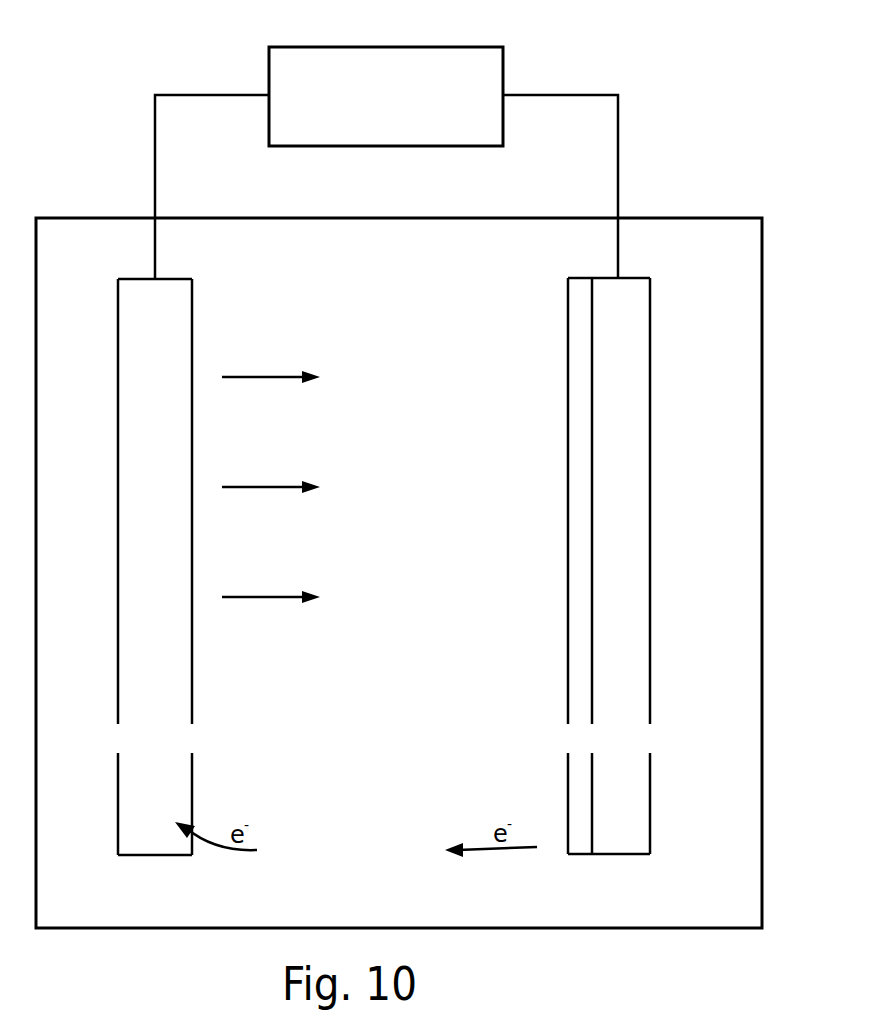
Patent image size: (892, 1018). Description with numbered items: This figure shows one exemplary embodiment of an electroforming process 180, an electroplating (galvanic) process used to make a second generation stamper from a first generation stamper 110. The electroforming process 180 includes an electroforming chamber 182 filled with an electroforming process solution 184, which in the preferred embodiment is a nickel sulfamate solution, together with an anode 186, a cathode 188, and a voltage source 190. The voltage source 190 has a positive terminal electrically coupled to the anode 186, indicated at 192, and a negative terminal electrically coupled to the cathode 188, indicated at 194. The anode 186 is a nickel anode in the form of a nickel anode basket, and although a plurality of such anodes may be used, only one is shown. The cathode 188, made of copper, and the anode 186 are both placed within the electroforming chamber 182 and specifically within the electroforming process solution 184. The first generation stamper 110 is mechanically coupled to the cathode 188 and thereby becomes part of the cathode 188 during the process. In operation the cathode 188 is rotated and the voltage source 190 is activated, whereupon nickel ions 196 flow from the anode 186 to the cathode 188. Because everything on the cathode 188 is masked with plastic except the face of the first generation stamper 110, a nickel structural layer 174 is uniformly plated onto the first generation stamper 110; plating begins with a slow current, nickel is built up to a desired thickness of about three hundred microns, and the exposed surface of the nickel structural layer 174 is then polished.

The electroforming process 180 is at (143, 75).
The voltage source 190 is at (355, 46).
The positive terminal coupling 192 is at (155, 152).
The negative terminal coupling 194 is at (618, 140).
The anode 186 is at (118, 514).
The cathode 188 is at (650, 380).
The nickel structural layer 174 is at (568, 338).
The first generation stamper 110 is at (578, 847).
The nickel ions 196 is at (259, 597).
The electroforming process solution 184 is at (498, 893).
The electroforming chamber 182 is at (762, 893).